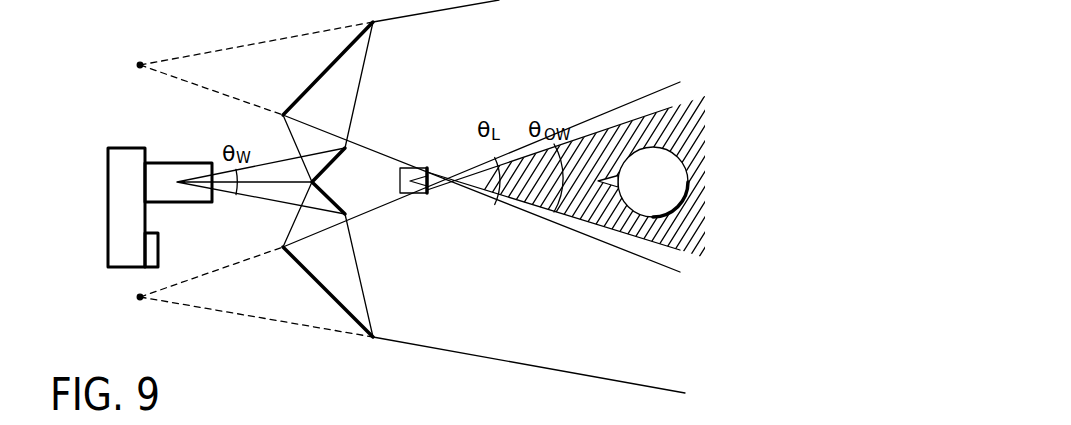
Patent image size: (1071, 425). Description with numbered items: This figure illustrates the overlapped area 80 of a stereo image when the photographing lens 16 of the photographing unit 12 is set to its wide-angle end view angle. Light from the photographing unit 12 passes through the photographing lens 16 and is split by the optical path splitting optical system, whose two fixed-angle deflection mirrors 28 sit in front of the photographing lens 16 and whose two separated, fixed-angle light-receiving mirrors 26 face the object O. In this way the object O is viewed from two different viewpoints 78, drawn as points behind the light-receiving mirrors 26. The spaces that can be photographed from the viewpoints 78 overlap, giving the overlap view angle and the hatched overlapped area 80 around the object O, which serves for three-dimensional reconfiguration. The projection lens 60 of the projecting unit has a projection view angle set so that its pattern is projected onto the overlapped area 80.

The photographing unit 12 is at (117, 268).
The photographing lens 16 is at (175, 163).
The light-receiving mirrors 26 is at (309, 85).
The deflection mirrors 28 is at (352, 213).
The projection lens 60 is at (413, 168).
The viewpoints 78 is at (138, 64).
The overlapped area 80 is at (648, 117).
The object O is at (641, 218).